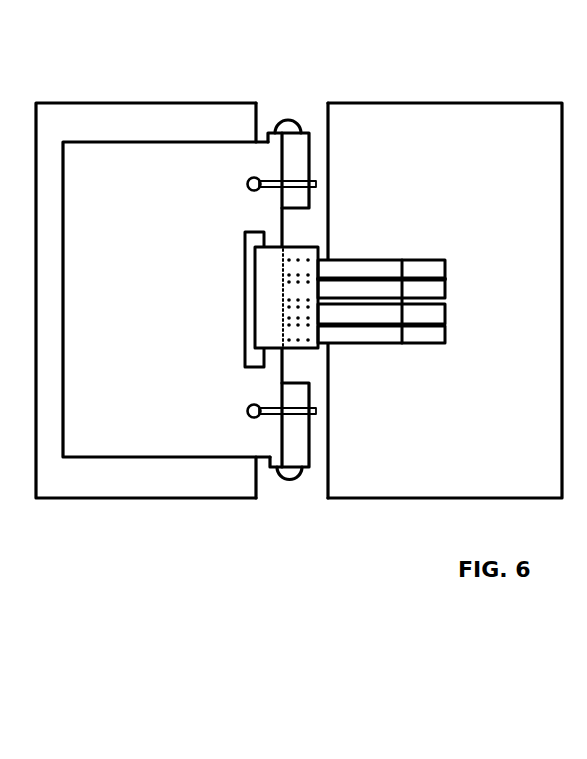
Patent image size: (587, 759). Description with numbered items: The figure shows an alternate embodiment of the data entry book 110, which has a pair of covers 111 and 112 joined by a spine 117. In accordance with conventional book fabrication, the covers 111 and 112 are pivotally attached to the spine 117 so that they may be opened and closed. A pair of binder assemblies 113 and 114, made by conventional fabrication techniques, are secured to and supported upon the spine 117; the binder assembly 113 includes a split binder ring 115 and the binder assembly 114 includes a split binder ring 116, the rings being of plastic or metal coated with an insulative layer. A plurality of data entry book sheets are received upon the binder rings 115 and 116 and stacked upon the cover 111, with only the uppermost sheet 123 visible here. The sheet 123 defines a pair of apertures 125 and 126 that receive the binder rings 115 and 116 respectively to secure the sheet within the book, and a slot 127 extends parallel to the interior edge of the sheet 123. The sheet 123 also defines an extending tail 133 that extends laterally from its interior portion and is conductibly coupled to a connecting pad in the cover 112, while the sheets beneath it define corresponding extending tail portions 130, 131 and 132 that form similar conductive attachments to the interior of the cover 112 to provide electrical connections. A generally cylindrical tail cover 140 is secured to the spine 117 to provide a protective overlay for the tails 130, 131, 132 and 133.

The data entry book 110 is at (207, 578).
The cover 111 is at (105, 103).
The cover 112 is at (450, 104).
The binder assembly 113 is at (305, 118).
The binder assembly 114 is at (316, 452).
The split binder ring 115 is at (318, 178).
The split binder ring 116 is at (316, 413).
The spine 117 is at (270, 103).
The data entry book sheet 123 is at (102, 458).
The aperture 125 is at (247, 186).
The aperture 126 is at (248, 412).
The slot 127 is at (246, 285).
The extending tail portion 130 is at (423, 308).
The extending tail portion 131 is at (447, 279).
The extending tail portion 132 is at (447, 308).
The extending tail 133 is at (414, 346).
The tail cover 140 is at (263, 368).